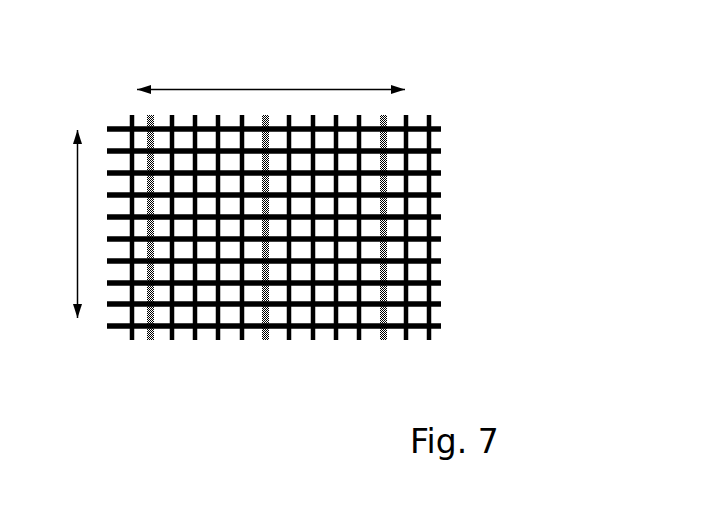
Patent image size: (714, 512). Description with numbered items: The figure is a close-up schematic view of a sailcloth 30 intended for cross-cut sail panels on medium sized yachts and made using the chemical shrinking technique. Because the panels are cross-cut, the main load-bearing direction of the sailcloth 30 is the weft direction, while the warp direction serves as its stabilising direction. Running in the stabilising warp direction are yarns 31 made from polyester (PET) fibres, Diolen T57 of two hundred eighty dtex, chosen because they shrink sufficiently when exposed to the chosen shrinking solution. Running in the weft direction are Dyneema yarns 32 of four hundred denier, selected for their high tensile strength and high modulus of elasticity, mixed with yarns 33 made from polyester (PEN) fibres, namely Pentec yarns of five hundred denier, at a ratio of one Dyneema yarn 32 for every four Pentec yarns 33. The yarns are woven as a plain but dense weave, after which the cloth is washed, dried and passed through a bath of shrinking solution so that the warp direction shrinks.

The sailcloth 30 is at (329, 236).
The yarns made from polyester (PET) fibres 31 is at (441, 129).
The Dyneema yarns 32 is at (150, 340).
The yarns made from polyester (PEN) fibres 33 is at (132, 340).